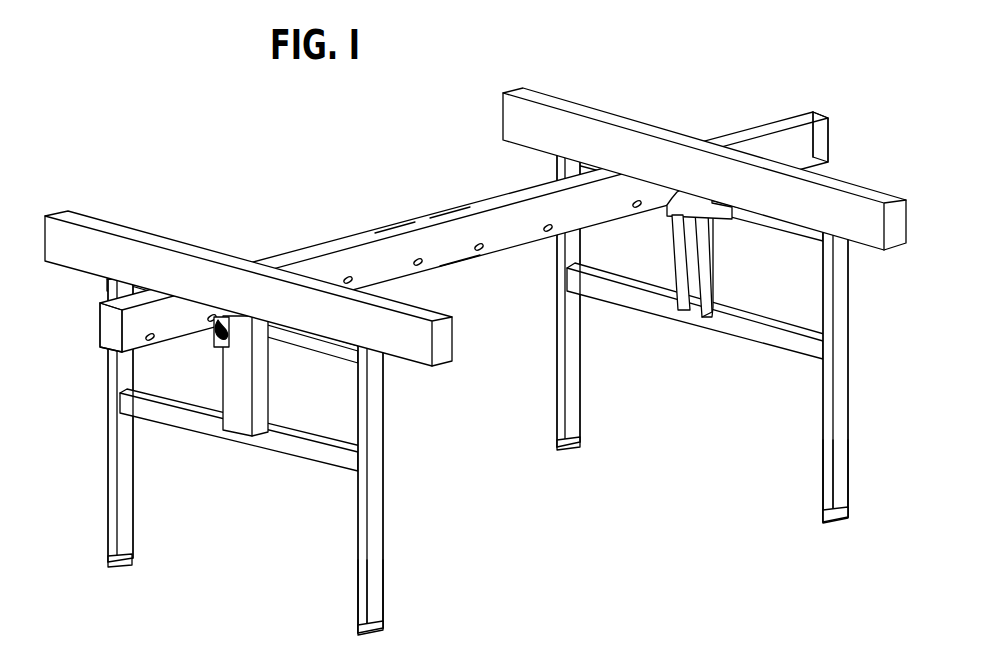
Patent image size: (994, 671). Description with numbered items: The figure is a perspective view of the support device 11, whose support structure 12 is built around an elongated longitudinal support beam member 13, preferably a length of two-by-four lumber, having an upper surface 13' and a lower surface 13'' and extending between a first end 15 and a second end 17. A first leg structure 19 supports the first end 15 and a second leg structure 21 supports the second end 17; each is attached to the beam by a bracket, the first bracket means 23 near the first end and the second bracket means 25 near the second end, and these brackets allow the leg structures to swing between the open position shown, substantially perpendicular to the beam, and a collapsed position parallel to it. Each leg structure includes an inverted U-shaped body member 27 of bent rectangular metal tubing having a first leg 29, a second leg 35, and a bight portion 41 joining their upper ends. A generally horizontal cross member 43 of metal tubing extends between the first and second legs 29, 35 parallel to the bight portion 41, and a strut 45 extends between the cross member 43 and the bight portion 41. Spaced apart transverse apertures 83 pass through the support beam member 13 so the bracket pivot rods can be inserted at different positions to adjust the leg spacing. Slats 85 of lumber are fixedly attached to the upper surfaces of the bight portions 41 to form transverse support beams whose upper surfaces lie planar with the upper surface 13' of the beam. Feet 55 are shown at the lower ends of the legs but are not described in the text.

The support device 11 is at (190, 115).
The support structure 12 is at (439, 219).
The support beam member 13 is at (444, 189).
The upper surface 13' is at (386, 197).
The lower surface 13'' is at (470, 289).
The first end 15 is at (110, 327).
The second end 17 is at (833, 132).
The first leg structure 19 is at (385, 607).
The second leg structure 21 is at (850, 497).
The first bracket means 23 is at (215, 346).
The second bracket means 25 is at (730, 215).
The body member 27 is at (372, 533).
The first leg 29 is at (362, 575).
The second leg 35 is at (133, 531).
The bight portion 41 is at (315, 342).
The cross member 43 is at (277, 447).
The strut 45 is at (258, 401).
The foot 55 is at (120, 566).
The transverse apertures 83 is at (152, 340).
The slats 85 is at (168, 247).